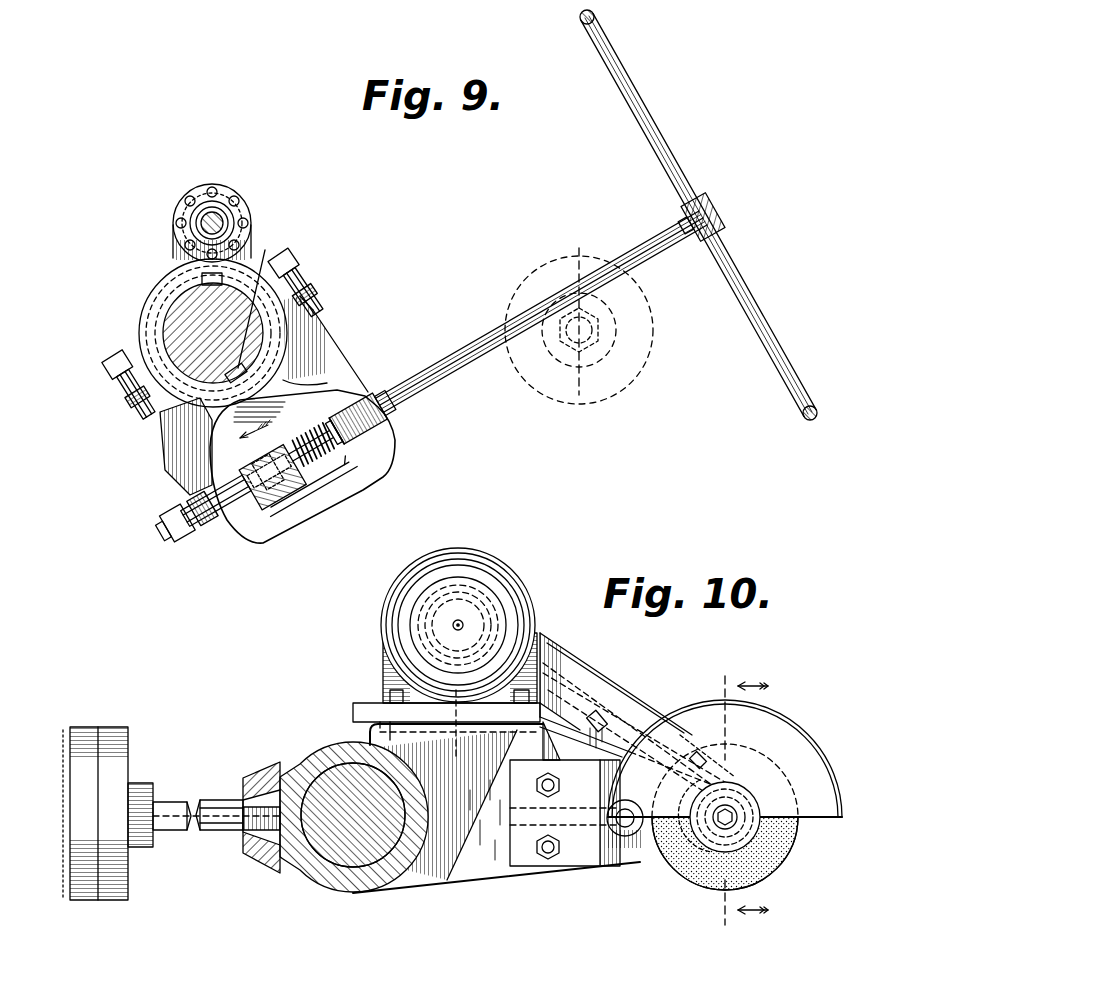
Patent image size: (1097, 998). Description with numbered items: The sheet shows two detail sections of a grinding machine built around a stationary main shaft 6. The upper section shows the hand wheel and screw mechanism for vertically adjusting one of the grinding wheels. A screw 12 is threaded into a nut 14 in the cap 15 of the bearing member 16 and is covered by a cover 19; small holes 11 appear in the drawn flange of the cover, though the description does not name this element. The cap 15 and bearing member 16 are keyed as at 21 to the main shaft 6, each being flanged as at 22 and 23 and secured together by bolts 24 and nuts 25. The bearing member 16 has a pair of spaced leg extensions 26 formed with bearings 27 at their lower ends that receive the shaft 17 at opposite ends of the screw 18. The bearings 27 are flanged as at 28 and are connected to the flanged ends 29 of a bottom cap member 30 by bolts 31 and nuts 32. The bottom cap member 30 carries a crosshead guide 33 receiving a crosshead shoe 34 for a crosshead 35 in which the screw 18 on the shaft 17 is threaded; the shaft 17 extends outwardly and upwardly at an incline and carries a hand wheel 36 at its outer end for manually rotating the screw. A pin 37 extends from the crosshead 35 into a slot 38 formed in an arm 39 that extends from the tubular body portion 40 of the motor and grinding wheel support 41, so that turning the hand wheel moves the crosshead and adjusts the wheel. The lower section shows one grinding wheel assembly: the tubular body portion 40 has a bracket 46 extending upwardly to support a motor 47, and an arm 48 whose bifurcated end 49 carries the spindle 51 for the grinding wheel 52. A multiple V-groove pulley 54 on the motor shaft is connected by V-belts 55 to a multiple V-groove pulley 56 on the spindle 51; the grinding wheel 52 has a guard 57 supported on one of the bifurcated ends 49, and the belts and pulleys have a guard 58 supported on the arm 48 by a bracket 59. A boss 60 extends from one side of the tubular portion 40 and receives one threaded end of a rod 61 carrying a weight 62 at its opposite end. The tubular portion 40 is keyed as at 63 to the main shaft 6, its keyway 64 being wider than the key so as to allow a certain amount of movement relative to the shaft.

In FIG. 9, the stationary main shaft 6 is at (172, 308).
In FIG. 10, the stationary main shaft 6 is at (287, 890).
In FIG. 9, the bolt holes 11 is at (207, 221).
In FIG. 9, the screw 12 is at (214, 212).
In FIG. 9, the nut 14 is at (222, 238).
In FIG. 9, the cap 15 is at (183, 275).
In FIG. 9, the bearing member 16 is at (333, 347).
In FIG. 9, the shaft 17 is at (625, 248).
In FIG. 9, the screw 18 is at (393, 458).
In FIG. 9, the cover 19 is at (203, 192).
In FIG. 9, the key 21 is at (264, 293).
In FIG. 9, the flange 22 is at (300, 276).
In FIG. 9, the flange 23 is at (318, 300).
In FIG. 9, the bolts 24 is at (278, 268).
In FIG. 9, the nuts 25 is at (345, 313).
In FIG. 9, the leg extensions 26 is at (281, 359).
In FIG. 9, the bearings 27 is at (358, 396).
In FIG. 9, the flange 28 is at (393, 378).
In FIG. 9, the flanged ends 29 is at (395, 412).
In FIG. 9, the bottom cap member 30 is at (370, 478).
In FIG. 9, the bolts 31 is at (311, 433).
In FIG. 9, the nuts 32 is at (396, 425).
In FIG. 9, the crosshead guide 33 is at (340, 497).
In FIG. 9, the crosshead shoe 34 is at (240, 523).
In FIG. 9, the crosshead 35 is at (268, 530).
In FIG. 9, the hand wheel 36 is at (758, 310).
In FIG. 9, the pin 37 is at (265, 515).
In FIG. 9, the slot 38 is at (295, 505).
In FIG. 9, the arm 39 is at (213, 467).
In FIG. 10, the tubular body portion 40 is at (352, 897).
In FIG. 10, the motor and grinding wheel support 41 is at (378, 727).
In FIG. 10, the bracket 46 is at (377, 712).
In FIG. 10, the motor 47 is at (487, 567).
In FIG. 10, the arm 48 is at (500, 873).
In FIG. 10, the bifurcated end 49 is at (650, 858).
In FIG. 10, the spindle 51 is at (703, 830).
In FIG. 9, the grinding wheel 52 is at (628, 358).
In FIG. 10, the grinding wheel 52 is at (787, 852).
In FIG. 10, the multiple V-groove pulley 54 is at (412, 623).
In FIG. 10, the V-belts 55 is at (633, 713).
In FIG. 10, the multiple V-groove pulley 56 is at (785, 818).
In FIG. 10, the guard 57 is at (778, 722).
In FIG. 10, the guard 58 is at (563, 672).
In FIG. 10, the bracket 59 is at (548, 727).
In FIG. 10, the boss 60 is at (267, 783).
In FIG. 10, the rod 61 is at (172, 831).
In FIG. 10, the weight 62 is at (124, 747).
In FIG. 10, the key 63 is at (440, 880).
In FIG. 10, the keyway 64 is at (422, 760).